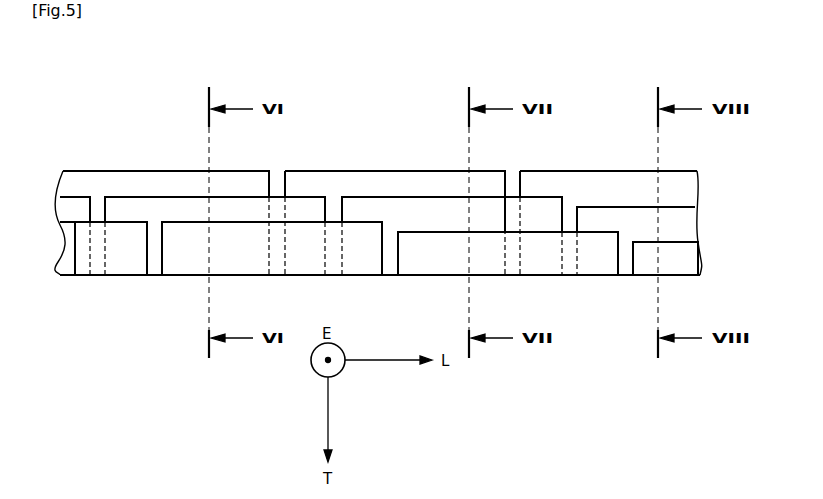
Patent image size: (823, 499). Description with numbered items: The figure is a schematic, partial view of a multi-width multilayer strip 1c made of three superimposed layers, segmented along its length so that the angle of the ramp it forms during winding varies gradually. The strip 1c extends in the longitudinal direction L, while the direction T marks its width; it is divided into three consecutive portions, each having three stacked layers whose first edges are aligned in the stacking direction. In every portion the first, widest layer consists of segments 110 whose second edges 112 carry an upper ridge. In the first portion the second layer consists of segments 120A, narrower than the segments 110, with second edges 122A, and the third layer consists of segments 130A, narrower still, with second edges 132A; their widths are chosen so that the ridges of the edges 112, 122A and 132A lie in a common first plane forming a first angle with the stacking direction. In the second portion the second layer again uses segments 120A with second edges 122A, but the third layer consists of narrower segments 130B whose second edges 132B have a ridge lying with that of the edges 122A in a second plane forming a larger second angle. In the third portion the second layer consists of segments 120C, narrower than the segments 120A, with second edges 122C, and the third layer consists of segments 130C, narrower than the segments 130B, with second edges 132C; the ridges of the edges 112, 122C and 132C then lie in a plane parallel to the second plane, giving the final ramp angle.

The multilayer strip 1c is at (448, 160).
The segments of the first layer 110 is at (545, 182).
The second edges of the segments 110 112 is at (168, 170).
The segments of the second layer of the first and second portions 120A is at (423, 211).
The segments of the second layer of the third portion 120C is at (672, 222).
The second edges of the segments 120A 122A is at (80, 193).
The second edges of the segments 120C 122C is at (598, 203).
The segments of the third layer of the first portion 130A is at (123, 265).
The segments of the third layer of the second portion 130B is at (443, 258).
The segments of the third layer of the third portion 130C is at (676, 262).
The second edges of the segments 130A 132A is at (83, 262).
The second edges of the segments 130B 132B is at (411, 232).
The second edges of the segments 130C 132C is at (683, 241).